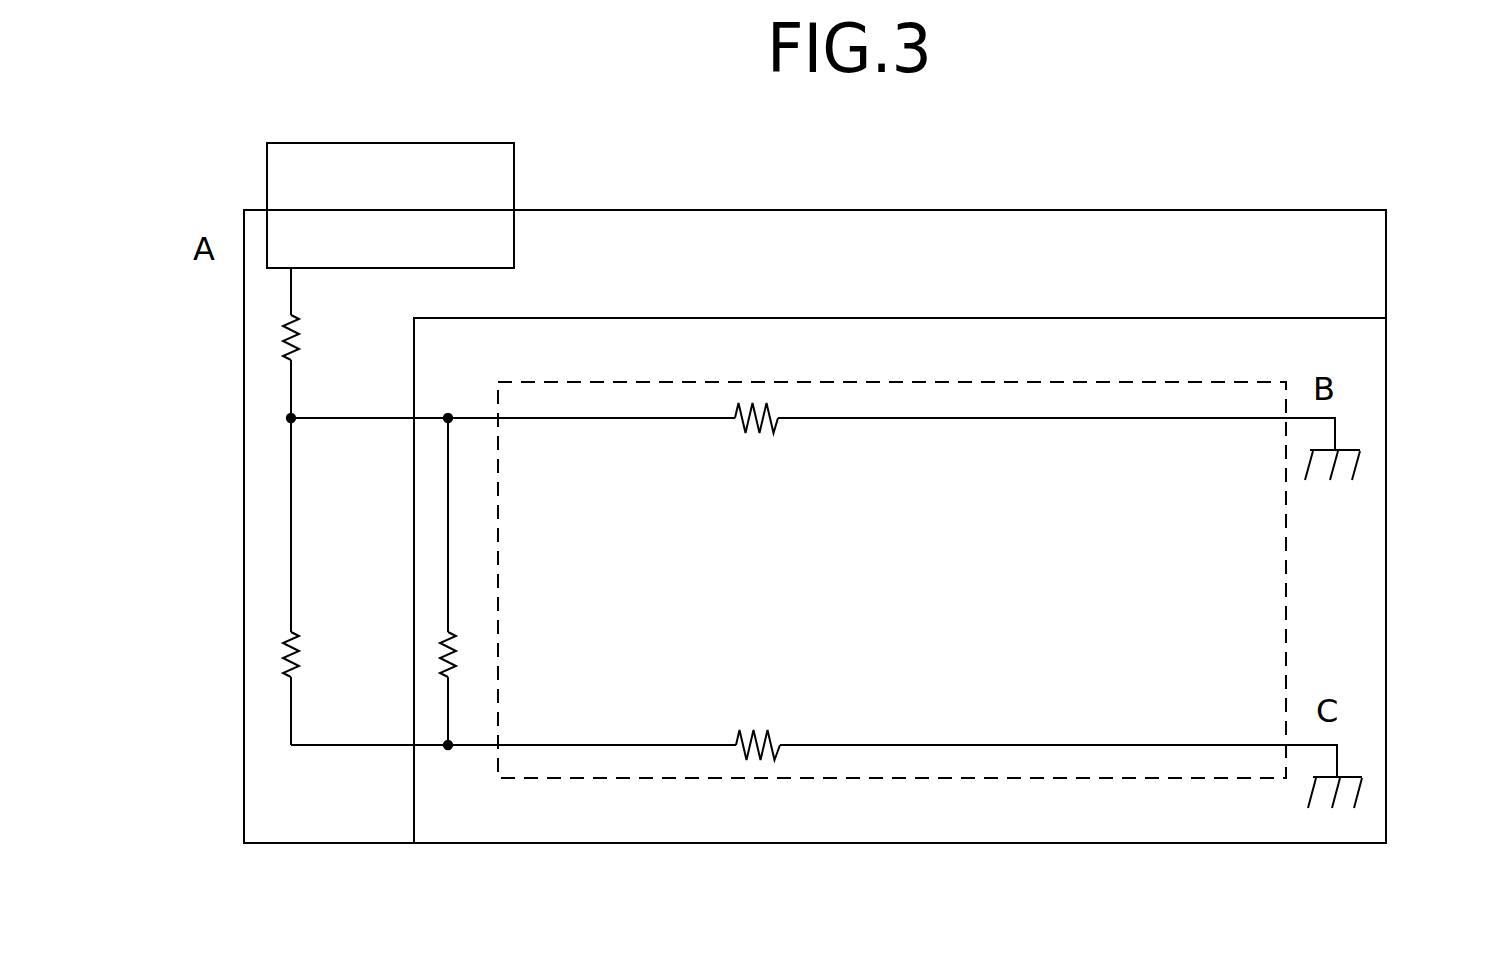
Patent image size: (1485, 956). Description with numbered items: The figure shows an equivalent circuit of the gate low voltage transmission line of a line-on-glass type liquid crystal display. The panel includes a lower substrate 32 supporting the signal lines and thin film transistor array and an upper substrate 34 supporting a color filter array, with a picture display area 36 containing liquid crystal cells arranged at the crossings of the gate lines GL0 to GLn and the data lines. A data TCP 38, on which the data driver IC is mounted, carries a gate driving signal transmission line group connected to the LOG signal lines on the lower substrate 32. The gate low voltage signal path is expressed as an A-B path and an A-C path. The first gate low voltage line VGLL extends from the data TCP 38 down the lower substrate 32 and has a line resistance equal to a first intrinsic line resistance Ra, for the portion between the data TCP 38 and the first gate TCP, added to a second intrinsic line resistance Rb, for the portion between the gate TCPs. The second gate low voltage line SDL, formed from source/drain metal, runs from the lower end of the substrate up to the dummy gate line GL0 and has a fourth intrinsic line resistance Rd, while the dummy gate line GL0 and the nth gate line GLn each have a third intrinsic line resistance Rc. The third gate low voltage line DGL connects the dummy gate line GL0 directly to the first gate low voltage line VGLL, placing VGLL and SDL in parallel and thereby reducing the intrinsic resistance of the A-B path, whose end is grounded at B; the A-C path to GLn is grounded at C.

The lower substrate 32 is at (1386, 263).
The upper substrate 34 is at (1386, 493).
The picture display area 36 is at (808, 578).
The data TCP 38 is at (515, 173).
The first intrinsic line resistance Ra is at (319, 337).
The second intrinsic line resistance Rb is at (320, 654).
The third intrinsic line resistance Rc is at (756, 581).
The fourth intrinsic line resistance Rd is at (475, 654).
The first gate low voltage line VGLL is at (291, 452).
The third gate low voltage line DGL is at (362, 421).
The second gate low voltage line SDL is at (449, 495).
The dummy gate line GL0 is at (952, 420).
The nth gate line GLn is at (945, 745).